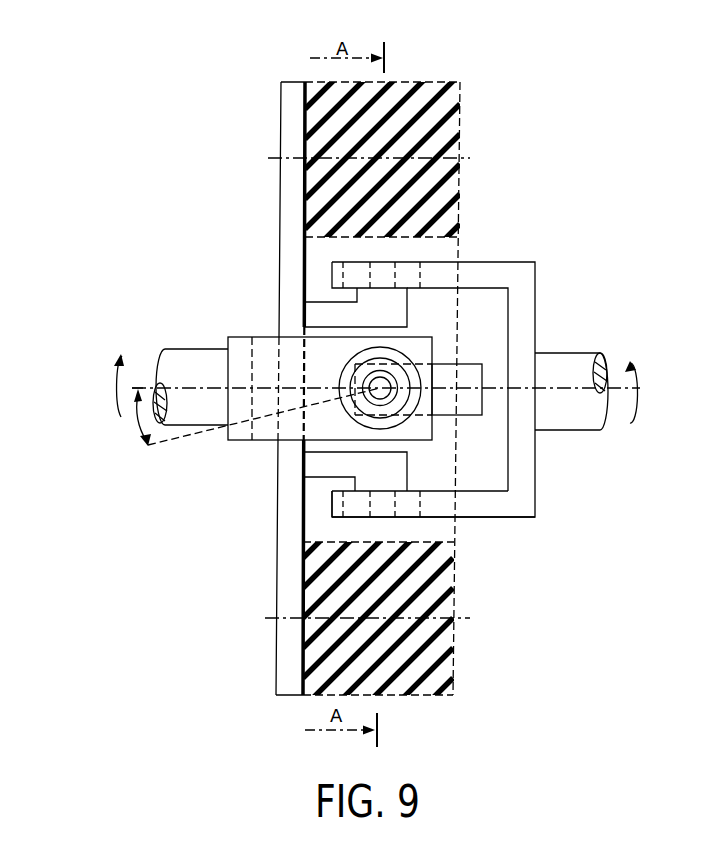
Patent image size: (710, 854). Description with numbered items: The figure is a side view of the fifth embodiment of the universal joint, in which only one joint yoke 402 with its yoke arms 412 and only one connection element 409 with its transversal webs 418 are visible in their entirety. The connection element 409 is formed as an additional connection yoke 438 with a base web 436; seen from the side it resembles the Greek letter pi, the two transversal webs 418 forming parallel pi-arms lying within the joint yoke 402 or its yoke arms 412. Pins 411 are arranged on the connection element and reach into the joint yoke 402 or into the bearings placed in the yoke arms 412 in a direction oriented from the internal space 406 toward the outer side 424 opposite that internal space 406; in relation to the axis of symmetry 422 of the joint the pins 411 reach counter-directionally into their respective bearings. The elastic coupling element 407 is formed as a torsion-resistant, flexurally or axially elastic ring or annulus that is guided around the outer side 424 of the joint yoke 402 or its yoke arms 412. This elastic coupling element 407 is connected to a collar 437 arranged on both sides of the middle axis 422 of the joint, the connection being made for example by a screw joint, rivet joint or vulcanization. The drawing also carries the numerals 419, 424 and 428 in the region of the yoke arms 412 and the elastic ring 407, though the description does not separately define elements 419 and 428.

The joint yoke 402 is at (528, 465).
The internal space 406 is at (482, 470).
The elastic coupling element 407 is at (457, 660).
The connection element 409 is at (319, 422).
The pin 411 is at (385, 273).
The yoke arm 412 is at (490, 505).
The transversal web 418 is at (323, 458).
The lower step 419 is at (380, 473).
The axis of symmetry 422 is at (572, 390).
The outer side 424 is at (465, 518).
The plate edge 428 is at (283, 615).
The base web 436 is at (287, 305).
The collar 437 is at (297, 202).
The connection yoke 438 is at (288, 250).